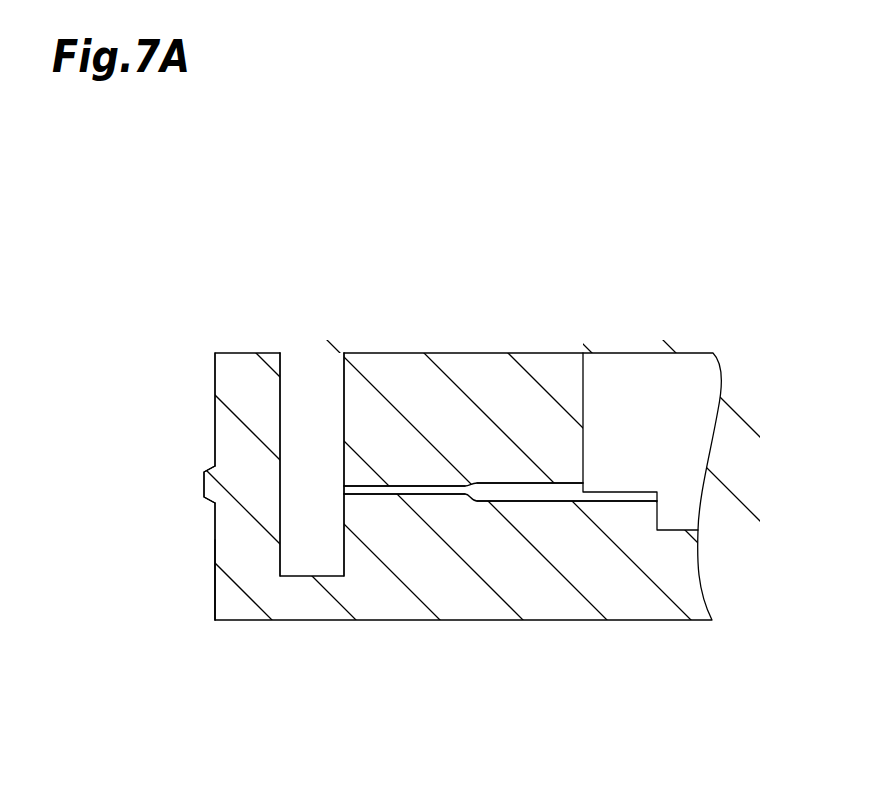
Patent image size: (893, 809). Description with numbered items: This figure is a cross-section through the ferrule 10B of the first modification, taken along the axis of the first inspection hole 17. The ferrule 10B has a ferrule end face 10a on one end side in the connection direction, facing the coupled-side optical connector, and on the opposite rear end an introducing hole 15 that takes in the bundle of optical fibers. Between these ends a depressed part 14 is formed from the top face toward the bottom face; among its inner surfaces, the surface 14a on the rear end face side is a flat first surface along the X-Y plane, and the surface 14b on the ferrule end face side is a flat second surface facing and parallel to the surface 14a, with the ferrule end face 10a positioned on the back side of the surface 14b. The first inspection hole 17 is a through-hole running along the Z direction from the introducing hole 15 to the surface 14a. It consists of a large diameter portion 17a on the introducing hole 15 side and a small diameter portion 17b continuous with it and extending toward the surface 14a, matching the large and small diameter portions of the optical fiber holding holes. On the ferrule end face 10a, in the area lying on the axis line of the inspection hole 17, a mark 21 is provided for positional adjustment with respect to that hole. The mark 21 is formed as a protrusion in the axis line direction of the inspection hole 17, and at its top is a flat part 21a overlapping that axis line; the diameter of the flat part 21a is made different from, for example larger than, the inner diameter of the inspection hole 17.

The ferrule 10B is at (550, 341).
The ferrule end face 10a is at (215, 582).
The depressed part 14 is at (312, 373).
The surface 14a is at (331, 372).
The surface 14b is at (280, 405).
The introducing hole 15 is at (688, 475).
The first inspection hole 17 is at (502, 693).
The large diameter portion 17a is at (479, 485).
The small diameter portion 17b is at (386, 490).
The mark 21 is at (199, 501).
The flat part 21a is at (202, 482).